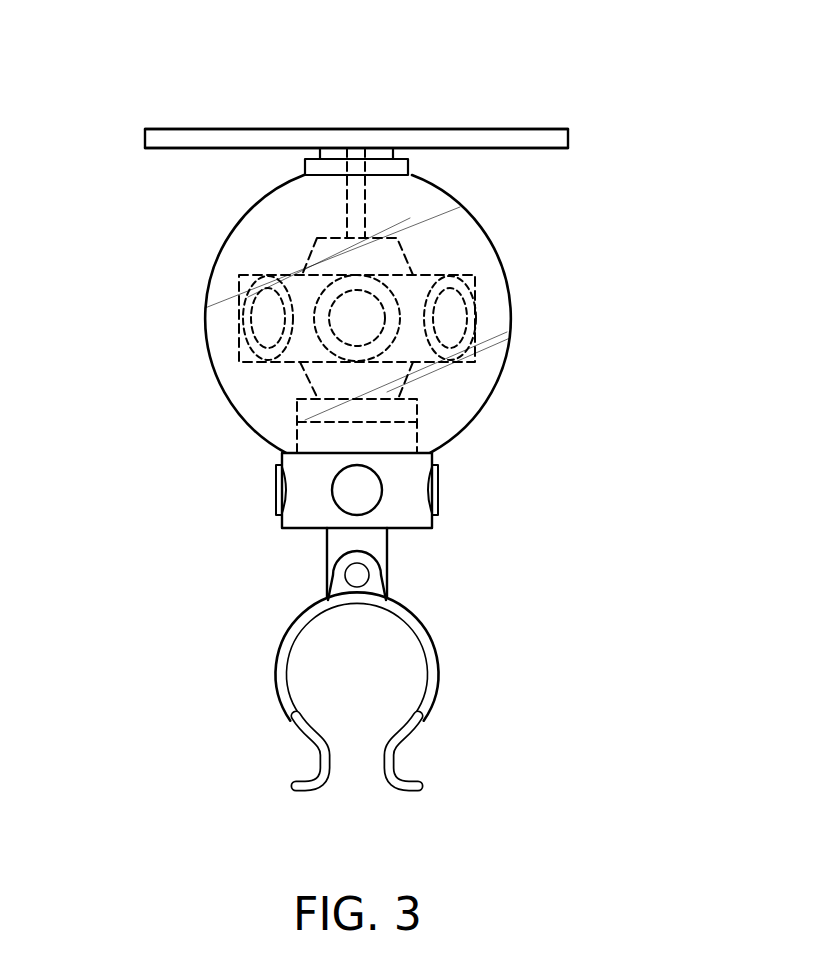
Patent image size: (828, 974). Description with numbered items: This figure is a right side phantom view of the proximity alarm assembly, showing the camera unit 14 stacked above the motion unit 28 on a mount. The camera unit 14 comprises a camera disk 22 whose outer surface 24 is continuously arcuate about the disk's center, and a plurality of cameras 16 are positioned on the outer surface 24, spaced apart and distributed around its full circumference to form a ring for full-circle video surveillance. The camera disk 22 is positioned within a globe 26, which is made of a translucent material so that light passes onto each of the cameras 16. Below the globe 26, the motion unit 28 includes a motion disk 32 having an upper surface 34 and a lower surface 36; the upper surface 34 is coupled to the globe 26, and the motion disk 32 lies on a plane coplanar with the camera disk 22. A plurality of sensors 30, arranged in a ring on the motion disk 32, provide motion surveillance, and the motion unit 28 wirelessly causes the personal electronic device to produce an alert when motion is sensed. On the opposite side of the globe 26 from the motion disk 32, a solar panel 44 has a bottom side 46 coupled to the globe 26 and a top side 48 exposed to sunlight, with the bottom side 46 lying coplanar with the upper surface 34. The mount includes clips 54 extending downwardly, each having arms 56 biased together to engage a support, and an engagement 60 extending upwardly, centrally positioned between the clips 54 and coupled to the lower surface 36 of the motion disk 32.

The camera unit 14 is at (373, 337).
The cameras 16 is at (262, 323).
The camera disk 22 is at (240, 276).
The outer surface 24 is at (300, 438).
The globe 26 is at (497, 247).
The motion unit 28 is at (362, 655).
The sensors 30 is at (353, 500).
The motion disk 32 is at (410, 528).
The upper surface 34 is at (313, 340).
The lower surface 36 is at (357, 528).
The solar panel 44 is at (145, 129).
The bottom side 46 is at (530, 129).
The top side 48 is at (527, 148).
The clips 54 is at (438, 677).
The arms 56 is at (277, 668).
The engagement 60 is at (327, 560).